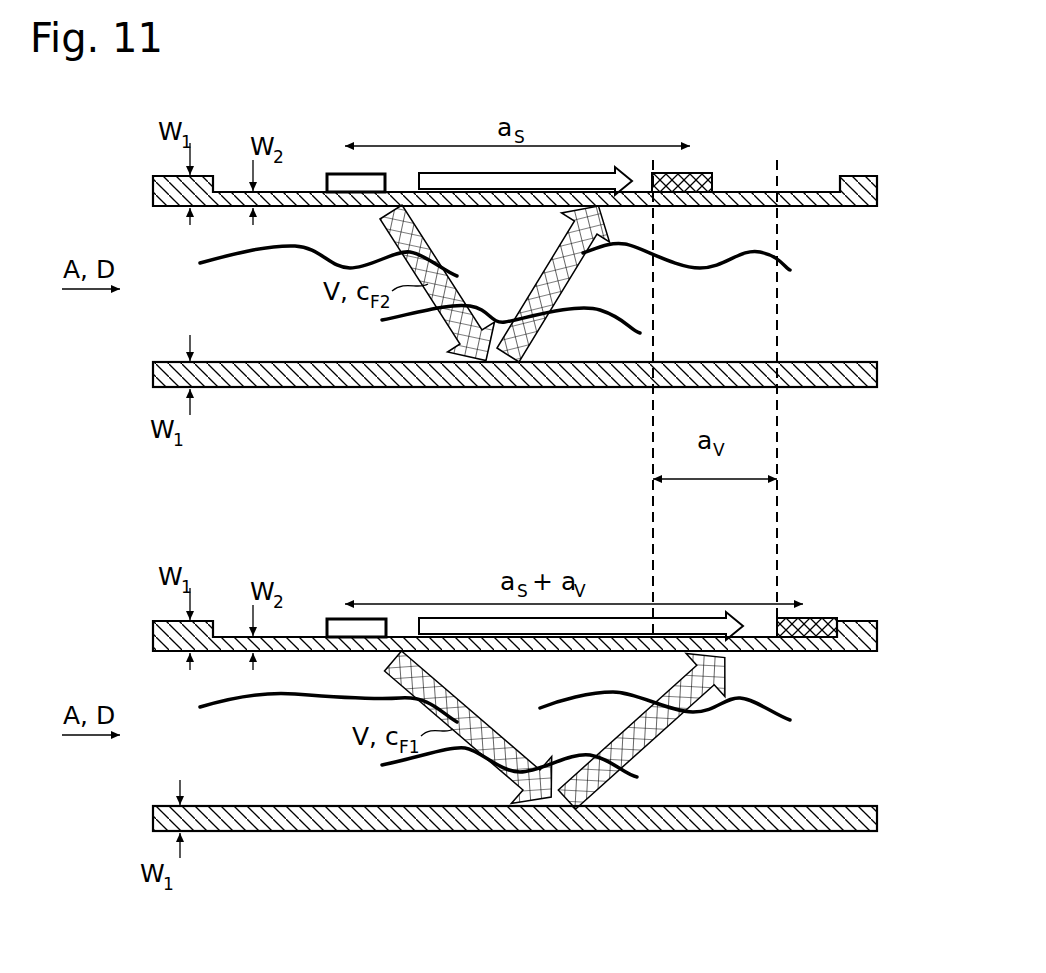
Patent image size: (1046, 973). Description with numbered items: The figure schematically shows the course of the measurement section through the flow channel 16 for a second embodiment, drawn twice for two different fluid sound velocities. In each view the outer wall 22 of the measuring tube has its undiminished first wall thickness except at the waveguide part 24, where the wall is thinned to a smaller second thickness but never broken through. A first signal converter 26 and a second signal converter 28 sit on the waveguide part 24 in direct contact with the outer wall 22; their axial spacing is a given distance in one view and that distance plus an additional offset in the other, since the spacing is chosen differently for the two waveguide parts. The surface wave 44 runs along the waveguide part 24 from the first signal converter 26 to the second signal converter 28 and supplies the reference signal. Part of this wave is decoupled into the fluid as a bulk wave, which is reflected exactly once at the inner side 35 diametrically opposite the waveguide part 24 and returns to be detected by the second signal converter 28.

The flow channel 16 is at (878, 270).
The outer wall 22 is at (199, 175).
The waveguide part 24 is at (290, 176).
The first signal converter 26 is at (335, 173).
The second signal converter 28 is at (696, 174).
The inner side 35 is at (333, 362).
The surface wave 44 is at (590, 177).